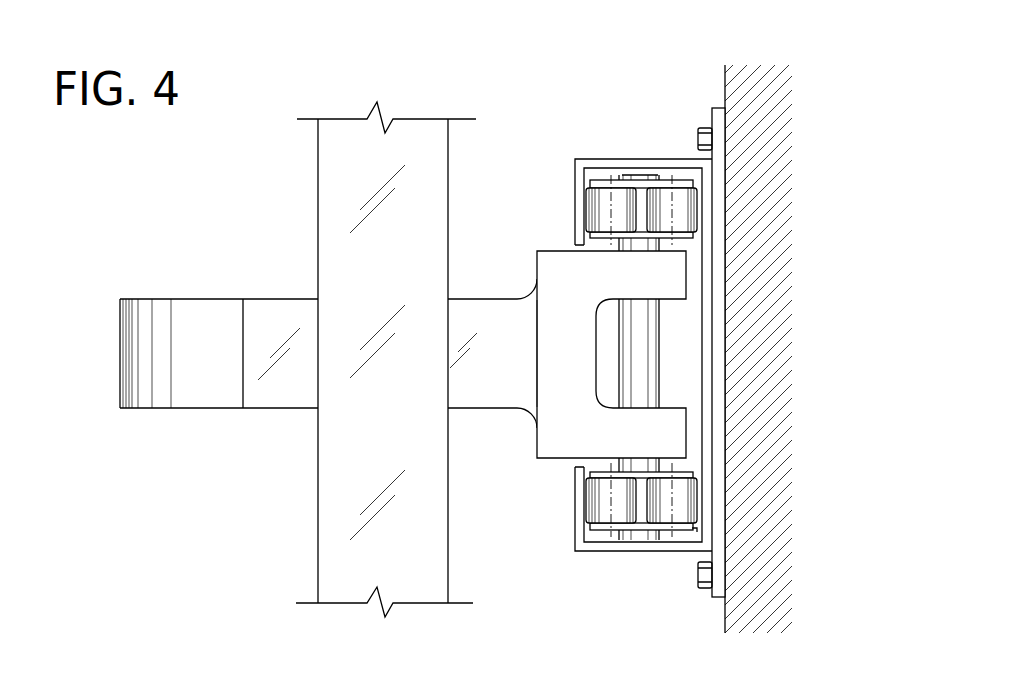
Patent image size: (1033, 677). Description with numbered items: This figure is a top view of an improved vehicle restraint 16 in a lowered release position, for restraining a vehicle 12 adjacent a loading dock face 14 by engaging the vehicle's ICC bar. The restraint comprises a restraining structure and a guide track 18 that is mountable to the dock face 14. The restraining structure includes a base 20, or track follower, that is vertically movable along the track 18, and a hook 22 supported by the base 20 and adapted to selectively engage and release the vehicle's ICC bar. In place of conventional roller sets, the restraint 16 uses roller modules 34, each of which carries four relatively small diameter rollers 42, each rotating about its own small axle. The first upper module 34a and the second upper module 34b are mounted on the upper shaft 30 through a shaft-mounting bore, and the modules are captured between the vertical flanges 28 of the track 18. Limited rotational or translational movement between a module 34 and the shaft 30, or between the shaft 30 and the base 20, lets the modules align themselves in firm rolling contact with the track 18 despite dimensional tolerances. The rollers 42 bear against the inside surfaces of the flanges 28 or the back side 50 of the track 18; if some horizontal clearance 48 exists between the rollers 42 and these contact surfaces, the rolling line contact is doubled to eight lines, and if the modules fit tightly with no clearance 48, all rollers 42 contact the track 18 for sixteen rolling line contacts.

The vehicle 12 is at (318, 225).
The loading dock face 14 is at (725, 85).
The improved vehicle restraint 16 is at (88, 313).
The guide track 18 is at (575, 527).
The base 20 is at (538, 270).
The hook 22 is at (207, 299).
The vertical flanges 28 is at (575, 187).
The upper shaft 30 is at (658, 380).
The roller module 34 is at (598, 180).
The first upper module 34a is at (697, 490).
The second upper module 34b is at (698, 202).
The rollers 42 is at (603, 210).
The horizontal clearance 48 is at (697, 528).
The back side of track 50 is at (703, 312).